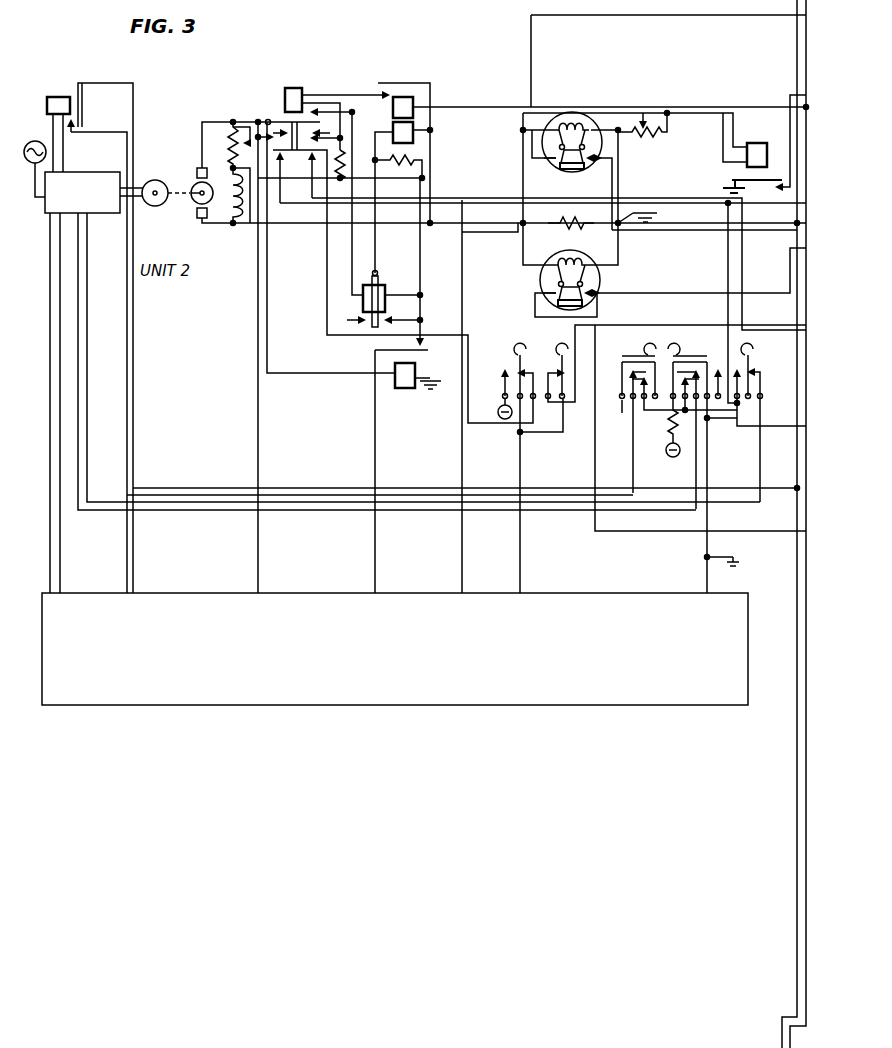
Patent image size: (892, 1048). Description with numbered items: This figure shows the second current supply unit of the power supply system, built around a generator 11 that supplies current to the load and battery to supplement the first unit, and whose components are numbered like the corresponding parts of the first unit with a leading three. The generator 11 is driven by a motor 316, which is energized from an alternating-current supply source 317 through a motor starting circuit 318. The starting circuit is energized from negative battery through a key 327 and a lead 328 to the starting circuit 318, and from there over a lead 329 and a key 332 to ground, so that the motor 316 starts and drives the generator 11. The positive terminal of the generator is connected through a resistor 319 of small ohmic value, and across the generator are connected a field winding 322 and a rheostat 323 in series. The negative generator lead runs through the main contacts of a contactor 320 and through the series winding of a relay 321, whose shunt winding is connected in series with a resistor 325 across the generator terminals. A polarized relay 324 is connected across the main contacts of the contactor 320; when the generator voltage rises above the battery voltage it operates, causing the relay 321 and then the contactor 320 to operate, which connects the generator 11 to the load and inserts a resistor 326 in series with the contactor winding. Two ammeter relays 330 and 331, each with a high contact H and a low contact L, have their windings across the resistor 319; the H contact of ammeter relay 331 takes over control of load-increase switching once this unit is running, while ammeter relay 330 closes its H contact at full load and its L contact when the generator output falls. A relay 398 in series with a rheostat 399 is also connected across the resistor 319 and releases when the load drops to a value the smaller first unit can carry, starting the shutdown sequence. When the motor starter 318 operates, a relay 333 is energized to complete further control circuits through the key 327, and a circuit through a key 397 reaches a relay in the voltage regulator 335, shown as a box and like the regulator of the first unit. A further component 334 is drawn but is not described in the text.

The generator 11 is at (197, 176).
The motor 316 is at (153, 180).
The alternating-current supply source 317 is at (47, 134).
The motor starting circuit 318 is at (102, 213).
The resistor 319 is at (563, 215).
The contactor 320 is at (293, 90).
The relay 321 is at (404, 97).
The field winding 322 is at (238, 225).
The rheostat 323 is at (226, 128).
The polarized relay 324 is at (385, 293).
The resistor 325 is at (390, 168).
The resistor 326 is at (347, 157).
The key 327 is at (713, 460).
The lead 328 is at (79, 303).
The lead 329 is at (87, 336).
The ammeter relay 330 is at (601, 280).
The ammeter relay 331 is at (590, 122).
The key 332 is at (752, 418).
The relay 333 is at (58, 97).
The relay 334 is at (397, 388).
The voltage regulator 335 is at (395, 649).
The key 397 is at (652, 459).
The relay 398 is at (767, 155).
The rheostat 399 is at (644, 138).